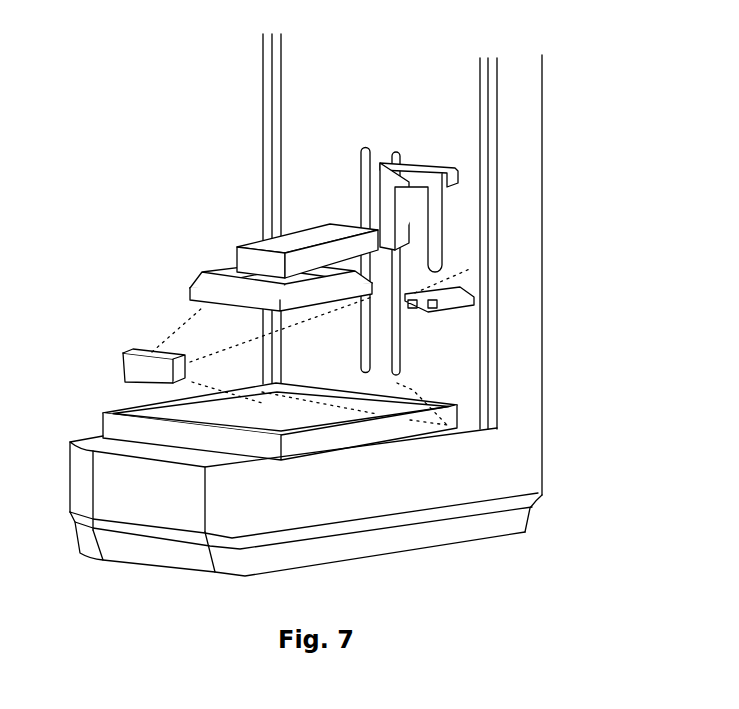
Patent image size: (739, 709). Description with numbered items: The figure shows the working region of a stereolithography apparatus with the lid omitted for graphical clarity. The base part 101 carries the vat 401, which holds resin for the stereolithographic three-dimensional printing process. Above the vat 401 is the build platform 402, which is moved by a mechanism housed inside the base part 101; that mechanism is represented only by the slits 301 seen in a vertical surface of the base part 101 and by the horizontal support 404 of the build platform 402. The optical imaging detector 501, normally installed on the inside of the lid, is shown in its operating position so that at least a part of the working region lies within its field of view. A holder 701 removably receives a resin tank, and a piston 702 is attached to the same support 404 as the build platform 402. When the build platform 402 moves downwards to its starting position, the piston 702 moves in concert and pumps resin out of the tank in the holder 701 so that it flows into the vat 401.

The base part 101 is at (533, 480).
The slits 301 is at (362, 156).
The vat 401 is at (110, 425).
The build platform 402 is at (189, 292).
The horizontal support 404 is at (237, 251).
The optical imaging detector 501 is at (130, 352).
The holder 701 is at (442, 299).
The piston 702 is at (436, 233).